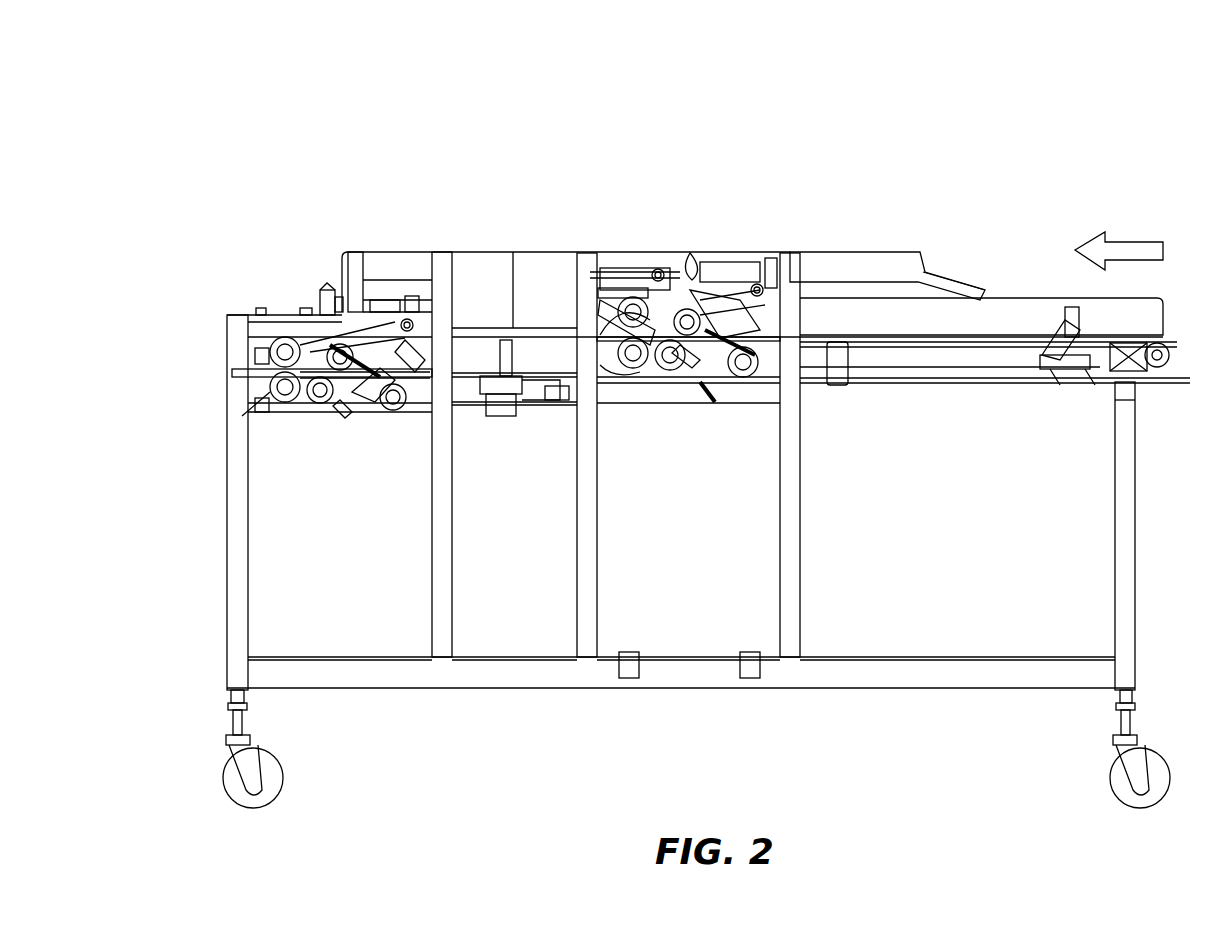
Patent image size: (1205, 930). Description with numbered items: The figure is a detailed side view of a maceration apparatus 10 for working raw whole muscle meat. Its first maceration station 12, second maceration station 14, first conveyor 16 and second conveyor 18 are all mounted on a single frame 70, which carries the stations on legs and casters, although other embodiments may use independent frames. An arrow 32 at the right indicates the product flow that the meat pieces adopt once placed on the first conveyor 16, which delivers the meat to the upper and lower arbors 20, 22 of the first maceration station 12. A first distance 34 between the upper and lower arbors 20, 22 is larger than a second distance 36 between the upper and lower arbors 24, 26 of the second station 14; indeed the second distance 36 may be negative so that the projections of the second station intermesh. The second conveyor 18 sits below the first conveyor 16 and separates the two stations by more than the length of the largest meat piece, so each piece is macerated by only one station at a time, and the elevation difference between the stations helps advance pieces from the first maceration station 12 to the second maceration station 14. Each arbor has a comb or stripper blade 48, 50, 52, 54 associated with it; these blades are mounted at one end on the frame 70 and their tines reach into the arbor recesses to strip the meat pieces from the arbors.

The maceration apparatus 10 is at (285, 78).
The first maceration station 12 is at (727, 216).
The second maceration station 14 is at (324, 216).
The first conveyor 16 is at (1015, 333).
The second conveyor 18 is at (476, 350).
The upper arbor 20 is at (630, 298).
The lower arbor 22 is at (642, 370).
The upper arbor 24 is at (281, 348).
The lower arbor 26 is at (287, 418).
The arrow 32 is at (1128, 242).
The first distance 34 is at (600, 340).
The second distance 36 is at (258, 374).
The stripper blade 48 is at (605, 320).
The stripper blade 50 is at (625, 368).
The stripper blade 52 is at (263, 357).
The stripper blade 54 is at (263, 412).
The frame 70 is at (228, 537).